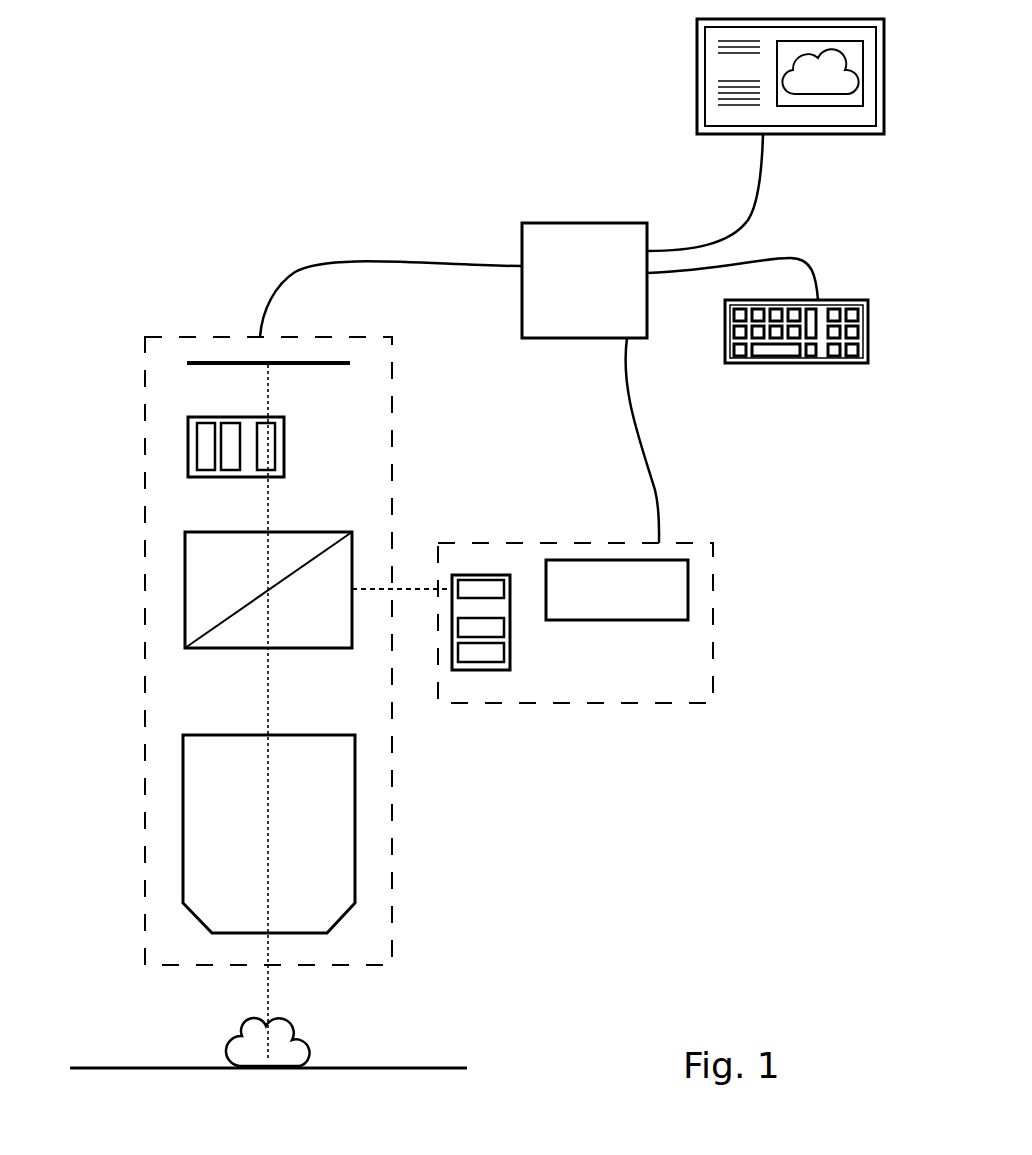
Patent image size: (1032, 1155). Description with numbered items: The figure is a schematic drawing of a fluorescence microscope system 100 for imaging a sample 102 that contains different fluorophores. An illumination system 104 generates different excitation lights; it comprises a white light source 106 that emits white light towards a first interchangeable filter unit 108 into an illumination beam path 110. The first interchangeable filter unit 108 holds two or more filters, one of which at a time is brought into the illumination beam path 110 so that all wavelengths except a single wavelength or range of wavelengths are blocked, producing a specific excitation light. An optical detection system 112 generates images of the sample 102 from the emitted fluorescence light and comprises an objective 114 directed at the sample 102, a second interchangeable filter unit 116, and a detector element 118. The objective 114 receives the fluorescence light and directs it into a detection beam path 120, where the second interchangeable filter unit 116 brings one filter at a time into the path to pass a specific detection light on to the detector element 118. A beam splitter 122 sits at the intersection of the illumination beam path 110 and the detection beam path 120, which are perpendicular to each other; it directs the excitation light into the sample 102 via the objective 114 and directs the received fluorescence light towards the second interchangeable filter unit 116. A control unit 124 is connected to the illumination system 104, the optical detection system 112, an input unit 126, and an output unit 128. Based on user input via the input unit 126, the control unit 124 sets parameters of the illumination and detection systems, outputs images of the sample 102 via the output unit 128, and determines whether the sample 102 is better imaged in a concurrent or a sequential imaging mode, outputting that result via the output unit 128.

The fluorescence microscope system 100 is at (142, 115).
The sample 102 is at (303, 1043).
The illumination system 104 is at (713, 672).
The white light source 106 is at (643, 620).
The first interchangeable filter unit 108 is at (510, 665).
The illumination beam path 110 is at (414, 587).
The optical detection system 112 is at (393, 772).
The objective 114 is at (355, 835).
The second interchangeable filter unit 116 is at (188, 462).
The detector element 118 is at (228, 362).
The detection beam path 120 is at (268, 405).
The beam splitter 122 is at (293, 648).
The control unit 124 is at (584, 280).
The input unit 126 is at (793, 363).
The output unit 128 is at (697, 66).